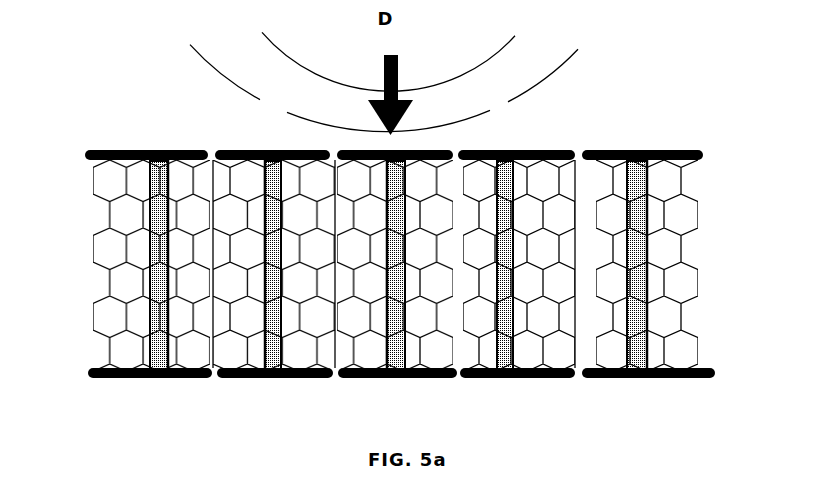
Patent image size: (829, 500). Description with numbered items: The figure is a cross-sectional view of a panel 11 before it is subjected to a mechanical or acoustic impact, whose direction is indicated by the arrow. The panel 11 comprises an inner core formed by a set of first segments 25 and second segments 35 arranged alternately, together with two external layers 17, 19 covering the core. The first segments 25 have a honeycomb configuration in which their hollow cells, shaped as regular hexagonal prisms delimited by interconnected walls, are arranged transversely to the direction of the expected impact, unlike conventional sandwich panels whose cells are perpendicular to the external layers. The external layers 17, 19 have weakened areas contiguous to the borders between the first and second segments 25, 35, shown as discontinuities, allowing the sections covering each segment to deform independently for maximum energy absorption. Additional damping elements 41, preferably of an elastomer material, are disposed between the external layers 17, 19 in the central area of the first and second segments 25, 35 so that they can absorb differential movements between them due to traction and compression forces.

The panel 11 is at (92, 110).
The external layer 17 is at (703, 154).
The external layer 19 is at (715, 371).
The first segment 25 is at (177, 357).
The second segment 35 is at (293, 360).
The additional damping element 41 is at (166, 172).